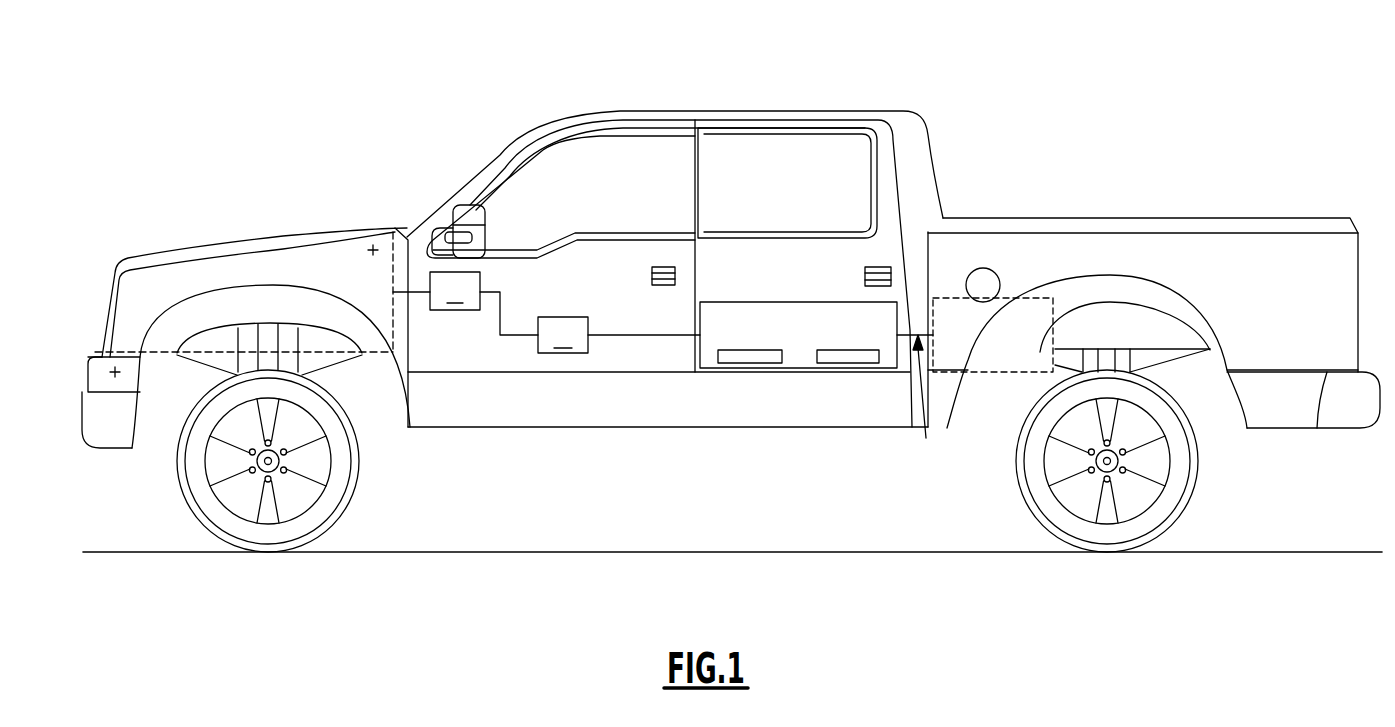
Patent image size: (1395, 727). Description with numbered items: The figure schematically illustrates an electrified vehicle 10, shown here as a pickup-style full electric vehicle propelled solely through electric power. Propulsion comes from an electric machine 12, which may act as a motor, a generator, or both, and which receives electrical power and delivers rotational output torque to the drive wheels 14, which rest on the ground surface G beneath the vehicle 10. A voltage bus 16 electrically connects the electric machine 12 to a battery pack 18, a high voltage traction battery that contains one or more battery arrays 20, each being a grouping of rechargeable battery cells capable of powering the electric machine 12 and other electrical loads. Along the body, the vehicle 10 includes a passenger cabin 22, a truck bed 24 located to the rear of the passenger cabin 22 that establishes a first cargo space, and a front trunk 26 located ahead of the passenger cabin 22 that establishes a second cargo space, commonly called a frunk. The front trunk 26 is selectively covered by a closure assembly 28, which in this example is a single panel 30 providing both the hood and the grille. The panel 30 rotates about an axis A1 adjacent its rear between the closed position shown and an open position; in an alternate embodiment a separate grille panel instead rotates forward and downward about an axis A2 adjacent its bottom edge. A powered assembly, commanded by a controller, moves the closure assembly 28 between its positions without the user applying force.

The electrified vehicle 10 is at (740, 98).
The electric machine 12 is at (1003, 296).
The drive wheels 14 is at (256, 535).
The voltage bus 16 is at (926, 438).
The battery pack 18 is at (790, 300).
The battery arrays 20 is at (752, 360).
The passenger cabin 22 is at (594, 173).
The truck bed 24 is at (1125, 217).
The front trunk 26 is at (380, 297).
The closure assembly 28 is at (213, 222).
The panel 30 is at (282, 238).
The axis A1 is at (369, 252).
The axis A2 is at (110, 372).
The ground surface G is at (458, 546).